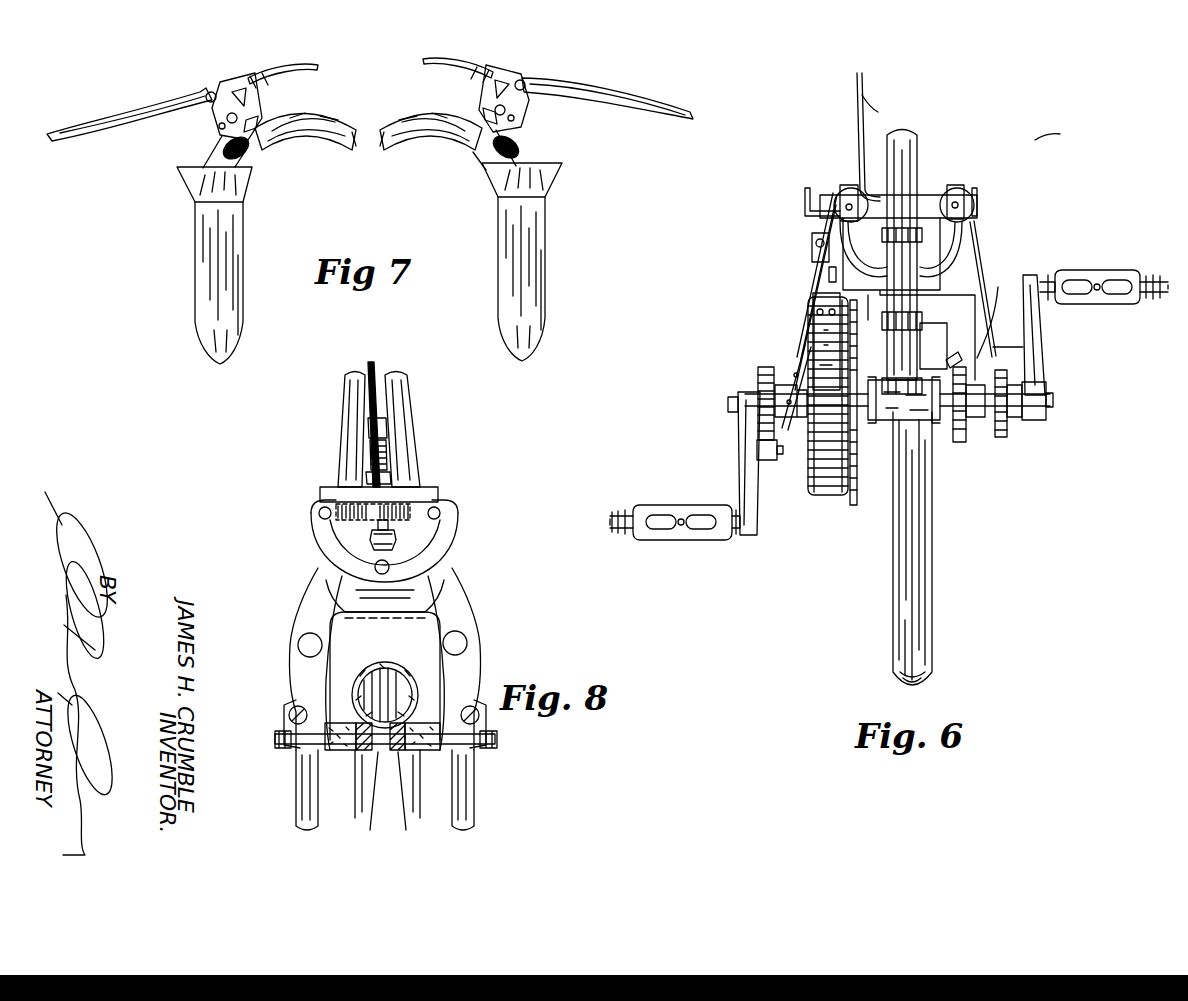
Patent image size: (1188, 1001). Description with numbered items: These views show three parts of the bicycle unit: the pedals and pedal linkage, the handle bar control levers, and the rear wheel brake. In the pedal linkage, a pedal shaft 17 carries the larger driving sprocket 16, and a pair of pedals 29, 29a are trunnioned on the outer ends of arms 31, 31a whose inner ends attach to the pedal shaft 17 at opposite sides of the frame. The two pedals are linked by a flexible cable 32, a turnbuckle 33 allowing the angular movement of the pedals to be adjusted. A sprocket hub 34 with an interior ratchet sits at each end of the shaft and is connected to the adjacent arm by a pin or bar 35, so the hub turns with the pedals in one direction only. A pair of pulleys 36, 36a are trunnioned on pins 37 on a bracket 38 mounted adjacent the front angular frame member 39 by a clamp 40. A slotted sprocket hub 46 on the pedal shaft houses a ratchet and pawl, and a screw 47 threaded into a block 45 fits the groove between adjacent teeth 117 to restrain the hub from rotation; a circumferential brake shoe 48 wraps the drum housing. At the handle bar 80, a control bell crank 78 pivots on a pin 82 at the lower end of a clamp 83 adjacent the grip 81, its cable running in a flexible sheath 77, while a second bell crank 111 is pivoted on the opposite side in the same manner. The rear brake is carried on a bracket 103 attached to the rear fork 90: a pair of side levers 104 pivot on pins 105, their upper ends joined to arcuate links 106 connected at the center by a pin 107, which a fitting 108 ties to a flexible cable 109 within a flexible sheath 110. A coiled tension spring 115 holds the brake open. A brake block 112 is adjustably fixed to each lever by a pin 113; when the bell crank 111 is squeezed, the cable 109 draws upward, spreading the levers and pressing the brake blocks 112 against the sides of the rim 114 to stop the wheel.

In FIG. 7, the control bell crank 78 is at (80, 130).
In FIG. 7, the pin 82 is at (211, 91).
In FIG. 7, the flexible sheath 77 is at (296, 72).
In FIG. 7, the handle bar 80 is at (330, 142).
In FIG. 7, the clamp 83 is at (255, 163).
In FIG. 7, the grip 81 is at (195, 263).
In FIG. 7, the bell crank 111 is at (626, 108).
In FIG. 8, the angular forked member 90 is at (412, 413).
In FIG. 8, the flexible sheath 110 is at (352, 400).
In FIG. 8, the flexible cable 109 is at (383, 495).
In FIG. 8, the coiled tension spring 115 is at (337, 503).
In FIG. 8, the arcuate links 106 is at (437, 525).
In FIG. 8, the fitting 108 is at (366, 538).
In FIG. 8, the pin 107 is at (390, 565).
In FIG. 8, the side levers 104 is at (460, 590).
In FIG. 8, the bracket 103 is at (410, 590).
In FIG. 8, the pin 105 is at (462, 641).
In FIG. 8, the brake block 112 is at (430, 740).
In FIG. 8, the pin 113 is at (495, 740).
In FIG. 8, the rim 114 is at (358, 753).
In FIG. 6, the front angular frame member 39 is at (903, 135).
In FIG. 6, the bracket 38 is at (927, 200).
In FIG. 6, the pulley 36 is at (836, 203).
In FIG. 6, the pulley 36a is at (964, 200).
In FIG. 6, the pins 37 is at (980, 205).
In FIG. 6, the clamp 40 is at (915, 236).
In FIG. 6, the flexible cable 32 is at (978, 250).
In FIG. 6, the teeth 117 is at (1004, 309).
In FIG. 6, the block 45 is at (932, 337).
In FIG. 6, the screw 47 is at (947, 358).
In FIG. 6, the turnbuckle 33 is at (790, 393).
In FIG. 6, the sprocket hub 34 is at (758, 383).
In FIG. 6, the arm 31 is at (737, 473).
In FIG. 6, the pin or bar 35 is at (767, 460).
In FIG. 6, the pedal 29 is at (662, 540).
In FIG. 6, the circumferential brake shoe 48 is at (827, 498).
In FIG. 6, the driving sprocket 16 is at (853, 506).
In FIG. 6, the sprocket hub 46 is at (968, 418).
In FIG. 6, the arm 31a is at (1038, 335).
In FIG. 6, the pedal shaft 17 is at (1052, 405).
In FIG. 6, the pedal 29a is at (1113, 305).